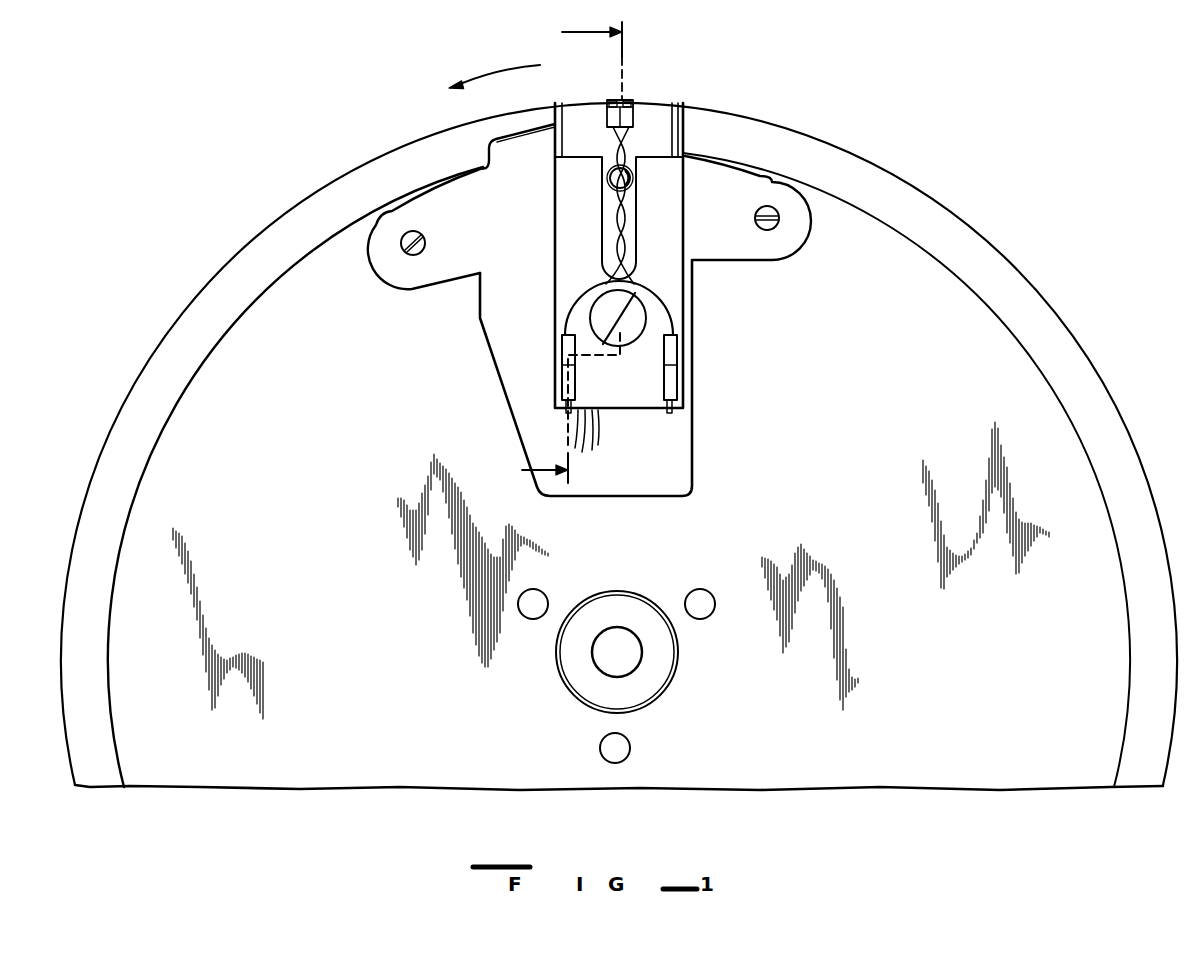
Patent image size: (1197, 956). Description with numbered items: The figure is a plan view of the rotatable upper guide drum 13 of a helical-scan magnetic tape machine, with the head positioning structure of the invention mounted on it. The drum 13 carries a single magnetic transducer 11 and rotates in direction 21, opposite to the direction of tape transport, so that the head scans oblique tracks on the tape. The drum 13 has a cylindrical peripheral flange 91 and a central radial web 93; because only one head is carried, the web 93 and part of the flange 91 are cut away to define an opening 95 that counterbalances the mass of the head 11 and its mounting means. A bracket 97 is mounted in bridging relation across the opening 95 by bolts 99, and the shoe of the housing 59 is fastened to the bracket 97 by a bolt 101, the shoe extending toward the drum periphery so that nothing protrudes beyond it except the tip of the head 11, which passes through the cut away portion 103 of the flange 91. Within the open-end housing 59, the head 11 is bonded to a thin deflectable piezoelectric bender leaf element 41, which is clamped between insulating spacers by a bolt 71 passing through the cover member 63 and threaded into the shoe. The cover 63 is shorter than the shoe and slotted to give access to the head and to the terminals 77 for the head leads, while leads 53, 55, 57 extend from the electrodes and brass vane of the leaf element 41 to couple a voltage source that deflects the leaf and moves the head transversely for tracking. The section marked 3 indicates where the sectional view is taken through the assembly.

The section line 3- 3 is at (572, 246).
The magnetic transducer 11 is at (624, 100).
The rotatable upper guide drum 13 is at (990, 226).
The direction of drum rotation 21 is at (502, 70).
The leaf element 41 is at (662, 115).
The lead 53 is at (598, 420).
The lead 55 is at (598, 440).
The lead 57 is at (578, 450).
The housing 59 is at (698, 305).
The cover member 63 is at (590, 269).
The bolt 71 is at (615, 320).
The terminals 77 is at (665, 385).
The cylindrical peripheral flange 91 is at (960, 279).
The central radial web 93 is at (813, 514).
The opening 95 is at (514, 397).
The bracket 97 is at (522, 214).
The bolts 99 is at (420, 231).
The bolt 101 is at (632, 183).
The cut away portion 103 is at (562, 110).